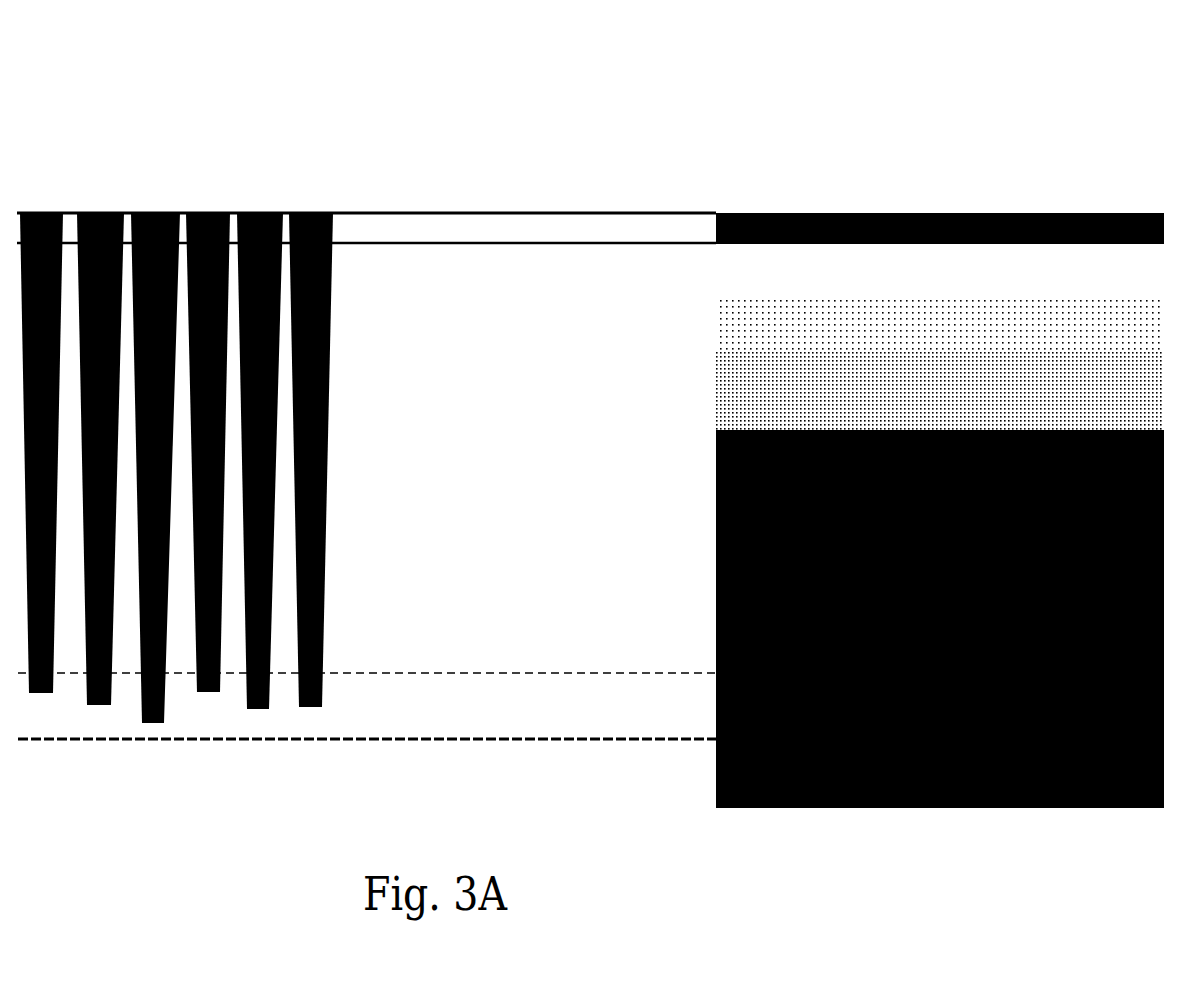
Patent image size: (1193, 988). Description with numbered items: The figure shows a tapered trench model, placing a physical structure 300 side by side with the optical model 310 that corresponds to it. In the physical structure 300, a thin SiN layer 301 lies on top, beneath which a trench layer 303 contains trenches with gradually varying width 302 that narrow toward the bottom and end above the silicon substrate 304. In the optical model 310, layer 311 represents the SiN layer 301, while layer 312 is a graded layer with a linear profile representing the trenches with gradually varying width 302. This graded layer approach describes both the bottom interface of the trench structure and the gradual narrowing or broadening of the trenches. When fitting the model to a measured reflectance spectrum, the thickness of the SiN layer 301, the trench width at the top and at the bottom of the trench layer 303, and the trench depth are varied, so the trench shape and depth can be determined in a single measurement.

The physical structure 300 is at (374, 175).
The SiN layer 301 is at (366, 231).
The trenches with gradually varying width 302 is at (248, 468).
The trench layer 303 is at (367, 697).
The silicon substrate 304 is at (367, 772).
The optical model 310 is at (940, 440).
The layer representing the SiN layer 311 is at (940, 229).
The graded layer 312 is at (940, 554).